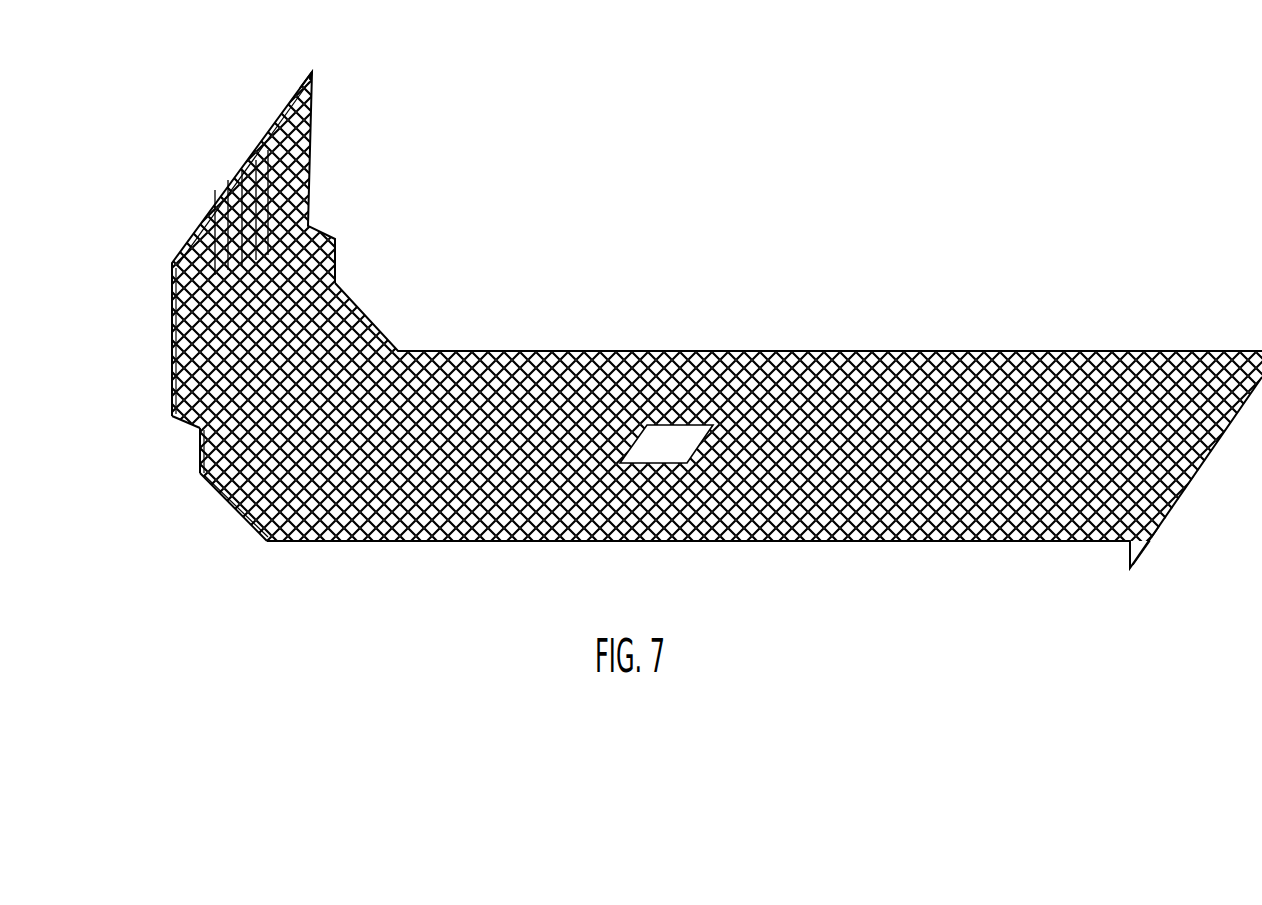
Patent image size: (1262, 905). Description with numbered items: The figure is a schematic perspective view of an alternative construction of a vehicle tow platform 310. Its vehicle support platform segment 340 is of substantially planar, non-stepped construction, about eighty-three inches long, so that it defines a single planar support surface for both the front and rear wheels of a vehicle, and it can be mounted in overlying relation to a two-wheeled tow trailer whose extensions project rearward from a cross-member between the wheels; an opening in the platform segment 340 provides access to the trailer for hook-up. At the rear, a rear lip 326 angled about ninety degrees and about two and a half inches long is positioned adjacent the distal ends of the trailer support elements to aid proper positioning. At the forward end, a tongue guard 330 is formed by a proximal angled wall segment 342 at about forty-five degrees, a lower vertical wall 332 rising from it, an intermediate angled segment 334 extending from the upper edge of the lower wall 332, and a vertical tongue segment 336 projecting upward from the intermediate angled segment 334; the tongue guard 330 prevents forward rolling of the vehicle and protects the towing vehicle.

The vehicle tow platform 310 is at (667, 296).
The rear lip 326 is at (1165, 525).
The tongue guard 330 is at (312, 73).
The lower vertical wall 332 is at (197, 458).
The intermediate angled segment 334 is at (178, 427).
The vertical tongue segment 336 is at (170, 342).
The vehicle support platform segment 340 is at (848, 348).
The proximal angled wall segment 342 is at (212, 517).